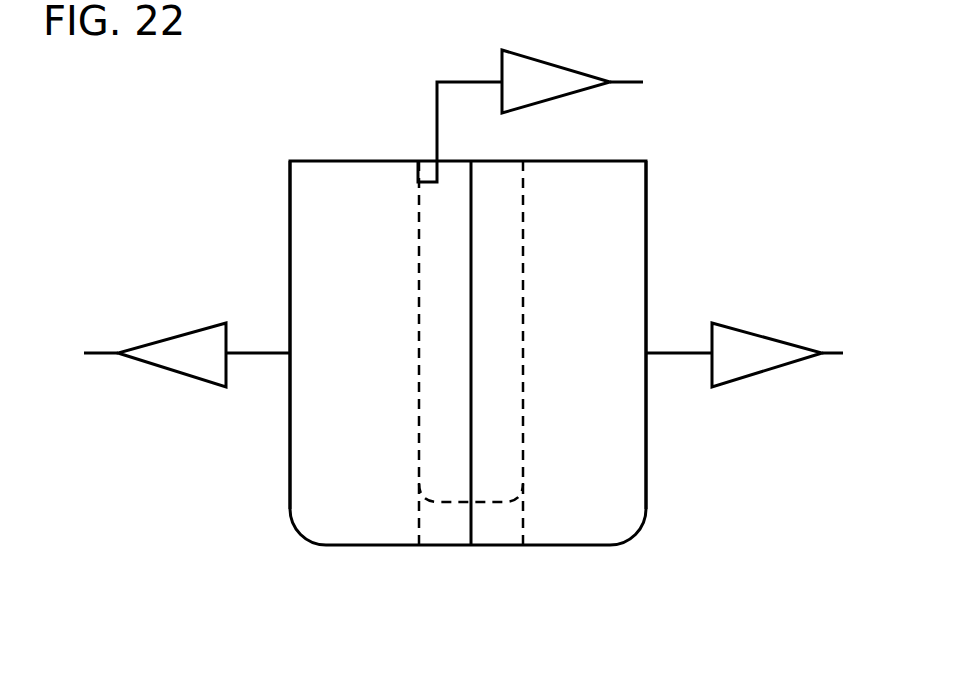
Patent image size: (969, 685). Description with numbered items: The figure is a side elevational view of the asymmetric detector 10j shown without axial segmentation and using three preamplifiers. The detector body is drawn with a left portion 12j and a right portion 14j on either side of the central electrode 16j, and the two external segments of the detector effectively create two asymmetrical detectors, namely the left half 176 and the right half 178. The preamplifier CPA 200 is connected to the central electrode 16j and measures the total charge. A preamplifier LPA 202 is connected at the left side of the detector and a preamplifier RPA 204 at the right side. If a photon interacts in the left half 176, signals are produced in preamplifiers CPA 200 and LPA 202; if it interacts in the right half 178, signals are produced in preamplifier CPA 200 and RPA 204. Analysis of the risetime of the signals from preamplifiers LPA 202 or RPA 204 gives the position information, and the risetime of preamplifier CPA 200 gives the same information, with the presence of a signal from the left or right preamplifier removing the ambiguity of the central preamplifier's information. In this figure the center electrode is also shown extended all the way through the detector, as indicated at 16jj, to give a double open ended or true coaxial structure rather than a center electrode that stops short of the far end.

The asymmetric detector 10j is at (298, 108).
The left portion of transducer body 12j is at (343, 237).
The right portion of transducer body 14j is at (635, 238).
The central electrode 16j is at (523, 193).
The extended center electrode 16jj is at (417, 523).
The left half of the detector 176 is at (374, 345).
The right half of the detector 178 is at (597, 345).
The preamplifier CPA 200 is at (540, 62).
The preamplifier LPA 202 is at (190, 374).
The preamplifier RPA 204 is at (735, 383).